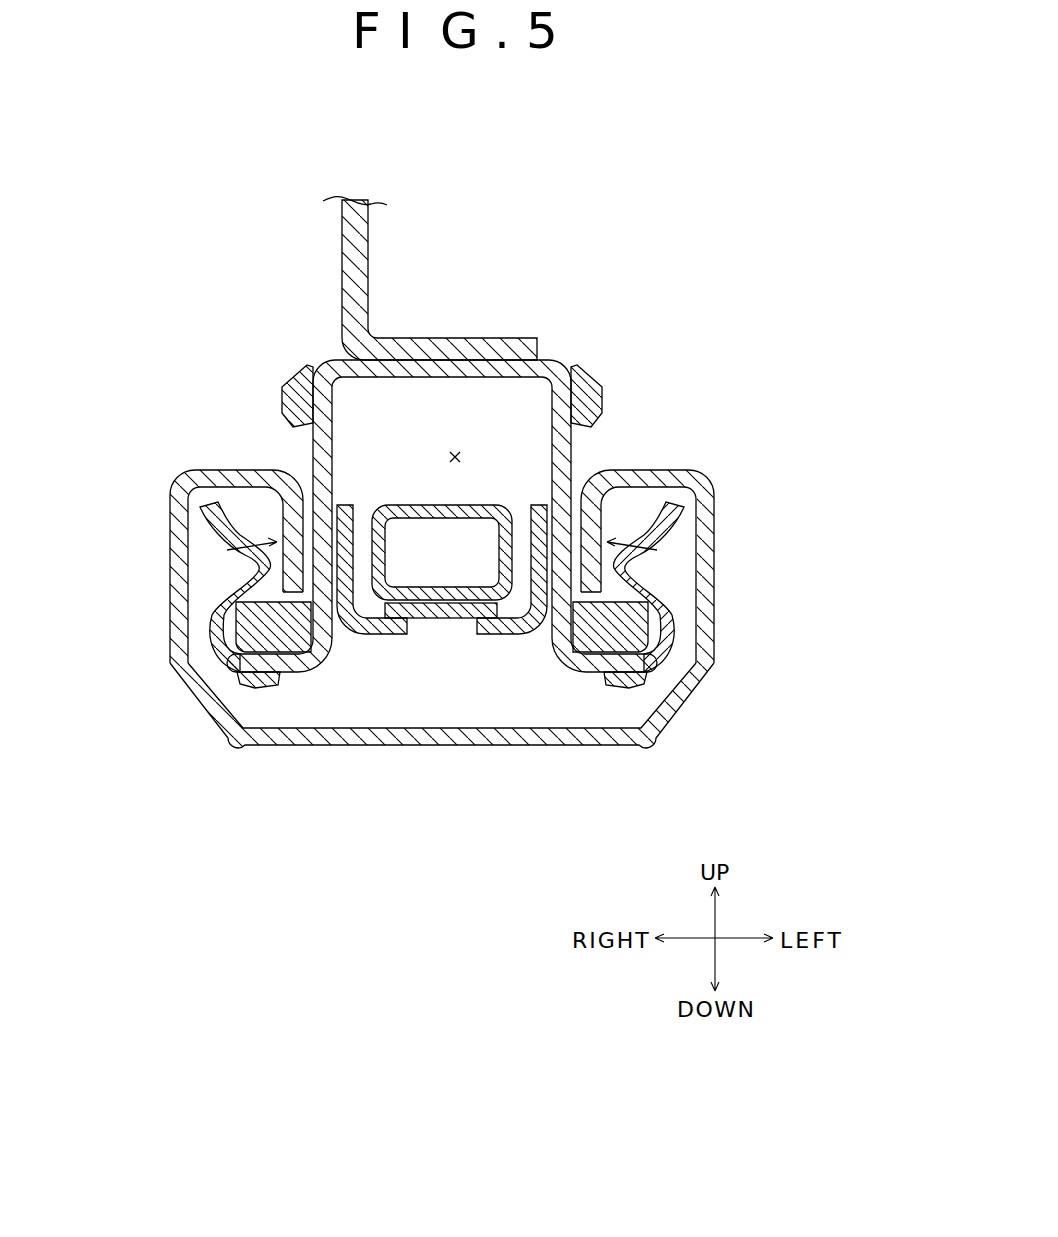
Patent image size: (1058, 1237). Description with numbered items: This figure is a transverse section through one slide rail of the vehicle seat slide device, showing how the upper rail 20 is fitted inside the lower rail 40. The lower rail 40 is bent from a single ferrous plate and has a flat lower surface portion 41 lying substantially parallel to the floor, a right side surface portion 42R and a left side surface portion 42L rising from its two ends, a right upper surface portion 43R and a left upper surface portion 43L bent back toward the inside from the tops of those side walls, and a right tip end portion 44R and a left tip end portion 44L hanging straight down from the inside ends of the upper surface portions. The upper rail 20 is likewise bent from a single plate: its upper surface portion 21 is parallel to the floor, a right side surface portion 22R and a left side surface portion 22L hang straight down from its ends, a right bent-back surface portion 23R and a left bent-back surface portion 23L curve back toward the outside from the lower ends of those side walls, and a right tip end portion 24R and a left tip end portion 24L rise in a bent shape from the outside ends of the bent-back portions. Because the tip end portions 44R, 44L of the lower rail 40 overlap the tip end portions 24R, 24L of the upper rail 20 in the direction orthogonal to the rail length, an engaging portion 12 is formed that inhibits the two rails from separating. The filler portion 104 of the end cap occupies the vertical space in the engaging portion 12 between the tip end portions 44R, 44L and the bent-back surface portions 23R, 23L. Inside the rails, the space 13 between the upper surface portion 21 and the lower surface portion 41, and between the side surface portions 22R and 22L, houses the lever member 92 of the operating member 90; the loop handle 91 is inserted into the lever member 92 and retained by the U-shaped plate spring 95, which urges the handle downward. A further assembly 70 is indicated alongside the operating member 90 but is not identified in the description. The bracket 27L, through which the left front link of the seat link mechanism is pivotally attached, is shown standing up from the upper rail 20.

The bracket 27L is at (357, 258).
The upper rail 20 is at (439, 538).
The upper surface portion 21 is at (428, 363).
The right side surface portion 22R is at (323, 457).
The left side surface portion 22L is at (560, 453).
The right bent-back surface portion 23R is at (265, 668).
The left bent-back surface portion 23L is at (619, 670).
The right tip end portion 24R is at (213, 530).
The left tip end portion 24L is at (673, 530).
The space 13 is at (455, 452).
The loop handle 91 is at (468, 508).
The operating member 90 is at (483, 422).
The lock mechanism 70 is at (518, 422).
The lower rail 40 is at (439, 597).
The lower surface portion 41 is at (425, 742).
The right side surface portion 42R is at (178, 610).
The left side surface portion 42L is at (707, 610).
The right upper surface portion 43R is at (227, 478).
The left upper surface portion 43L is at (660, 478).
The right tip end portion 44R is at (287, 480).
The left tip end portion 44L is at (597, 480).
The engaging portion 12 is at (262, 546).
The filler portion 104 is at (265, 672).
The plate spring 95 is at (437, 612).
The lever member 92 is at (497, 627).